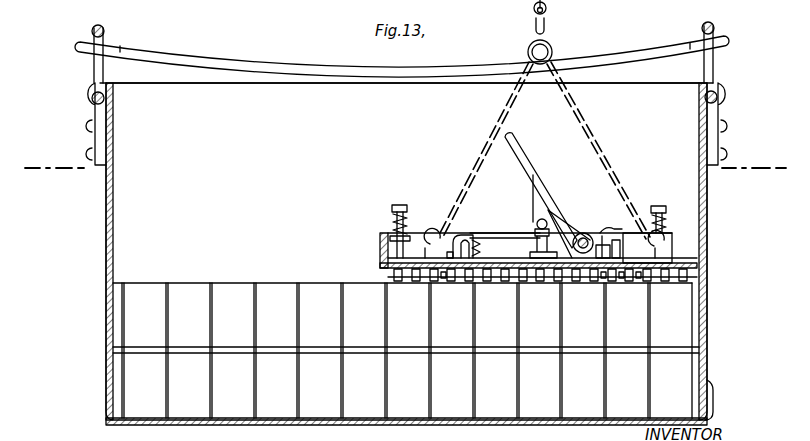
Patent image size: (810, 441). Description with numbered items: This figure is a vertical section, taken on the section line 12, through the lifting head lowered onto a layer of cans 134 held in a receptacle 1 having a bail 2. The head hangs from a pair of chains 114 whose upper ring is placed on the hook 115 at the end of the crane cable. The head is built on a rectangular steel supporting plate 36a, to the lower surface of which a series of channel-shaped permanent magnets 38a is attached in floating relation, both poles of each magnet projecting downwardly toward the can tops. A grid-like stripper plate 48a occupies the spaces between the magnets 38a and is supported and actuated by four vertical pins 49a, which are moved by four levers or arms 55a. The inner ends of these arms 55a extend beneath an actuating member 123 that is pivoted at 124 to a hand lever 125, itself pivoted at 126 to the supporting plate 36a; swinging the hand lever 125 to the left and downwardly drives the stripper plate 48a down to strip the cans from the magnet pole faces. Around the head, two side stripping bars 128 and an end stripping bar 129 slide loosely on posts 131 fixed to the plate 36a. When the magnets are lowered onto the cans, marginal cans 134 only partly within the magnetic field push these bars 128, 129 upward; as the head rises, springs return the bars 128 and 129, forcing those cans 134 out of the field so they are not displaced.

The receptacle body 1 is at (104, 214).
The bail handle 2 is at (704, 354).
The section line 12 is at (766, 158).
The supporting plate 36a is at (700, 271).
The permanent magnets 38a is at (604, 283).
The stripper plate 48a is at (441, 284).
The vertical pins 49a is at (480, 252).
The levers or arms 55a is at (482, 232).
The chains 114 is at (607, 153).
The hook 115 is at (552, 30).
The actuating member 123 is at (538, 226).
The pivot 124 is at (546, 217).
The hand lever 125 is at (580, 160).
The pivot 126 is at (566, 274).
The side stripping bars 128 is at (432, 232).
The end stripping bar 129 is at (380, 240).
The posts 131 is at (393, 208).
The cans 134 is at (355, 296).